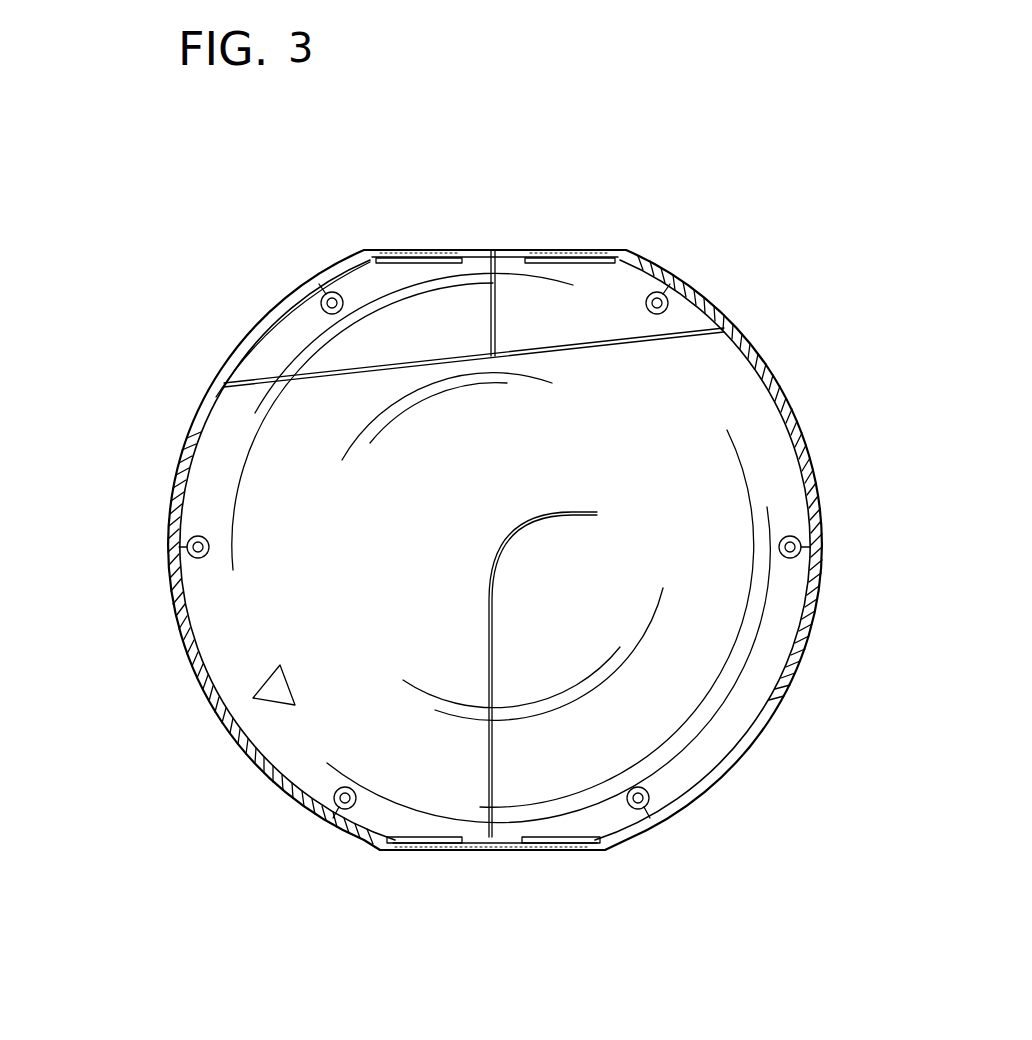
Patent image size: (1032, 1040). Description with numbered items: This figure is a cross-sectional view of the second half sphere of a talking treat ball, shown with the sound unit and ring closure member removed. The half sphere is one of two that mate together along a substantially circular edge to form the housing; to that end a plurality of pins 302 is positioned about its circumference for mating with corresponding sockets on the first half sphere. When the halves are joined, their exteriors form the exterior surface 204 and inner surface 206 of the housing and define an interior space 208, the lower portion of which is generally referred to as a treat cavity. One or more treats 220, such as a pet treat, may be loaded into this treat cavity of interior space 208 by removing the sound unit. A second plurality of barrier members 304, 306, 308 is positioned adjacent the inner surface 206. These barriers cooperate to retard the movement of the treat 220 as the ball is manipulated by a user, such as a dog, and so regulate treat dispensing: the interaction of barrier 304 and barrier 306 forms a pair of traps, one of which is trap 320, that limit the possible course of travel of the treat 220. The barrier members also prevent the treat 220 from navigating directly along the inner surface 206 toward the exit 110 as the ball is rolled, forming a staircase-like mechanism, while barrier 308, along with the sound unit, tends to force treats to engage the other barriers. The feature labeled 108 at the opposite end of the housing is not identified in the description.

The bottom plate 108 is at (494, 858).
The exit 110 is at (491, 243).
The exterior surface 204 is at (808, 630).
The inner surface 206 is at (744, 722).
The interior space 208 is at (238, 475).
The treat 220 is at (258, 690).
The pins 302 is at (684, 300).
The barrier member 304 is at (497, 305).
The barrier member 306 is at (600, 345).
The barrier member 308 is at (575, 507).
The trap 320 is at (417, 314).